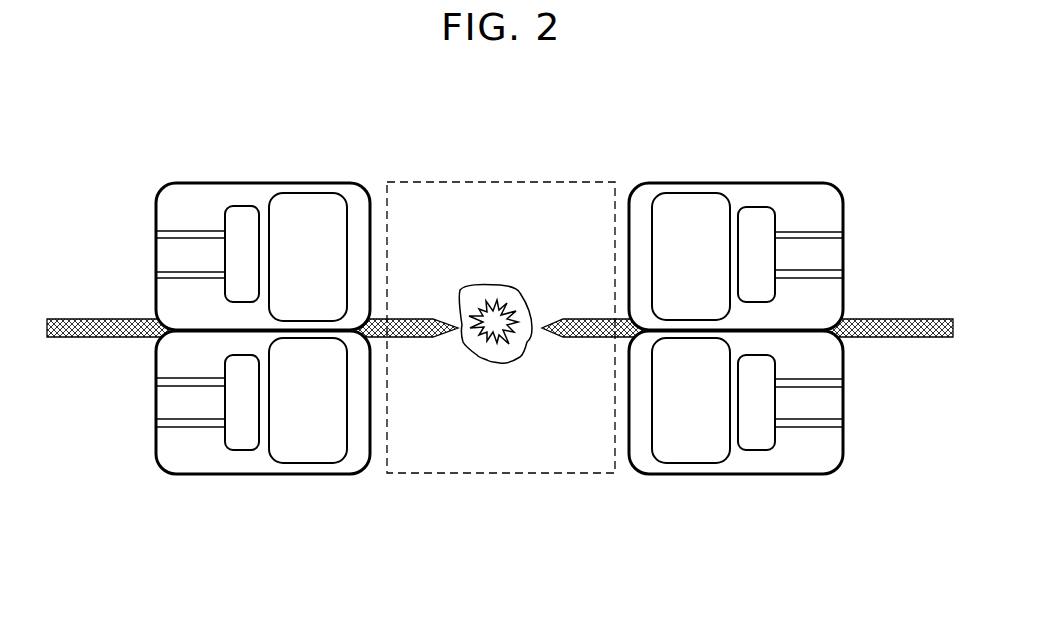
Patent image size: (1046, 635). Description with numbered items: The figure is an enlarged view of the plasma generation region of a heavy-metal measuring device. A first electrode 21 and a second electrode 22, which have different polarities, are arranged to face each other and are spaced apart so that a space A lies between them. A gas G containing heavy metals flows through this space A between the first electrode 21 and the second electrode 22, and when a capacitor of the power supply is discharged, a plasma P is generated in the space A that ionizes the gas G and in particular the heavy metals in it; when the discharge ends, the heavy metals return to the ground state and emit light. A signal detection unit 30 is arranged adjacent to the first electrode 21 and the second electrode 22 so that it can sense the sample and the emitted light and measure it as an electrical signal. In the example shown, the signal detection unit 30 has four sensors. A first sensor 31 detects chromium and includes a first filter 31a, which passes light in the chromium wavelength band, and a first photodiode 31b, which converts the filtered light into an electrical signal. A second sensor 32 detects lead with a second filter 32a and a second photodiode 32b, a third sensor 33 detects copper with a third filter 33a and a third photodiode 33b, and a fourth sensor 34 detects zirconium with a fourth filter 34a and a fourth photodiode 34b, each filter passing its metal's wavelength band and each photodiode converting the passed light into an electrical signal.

The first electrode 21 is at (87, 337).
The second electrode 22 is at (922, 337).
The signal detection unit 30 is at (535, 325).
The first sensor 31 is at (263, 436).
The first filter 31a is at (307, 463).
The first photodiode 31b is at (243, 450).
The second sensor 32 is at (263, 226).
The second filter 32a is at (307, 197).
The second photodiode 32b is at (243, 210).
The third sensor 33 is at (736, 436).
The third filter 33a is at (692, 463).
The third photodiode 33b is at (757, 450).
The fourth sensor 34 is at (736, 226).
The fourth filter 34a is at (693, 197).
The fourth photodiode 34b is at (757, 210).
The space A is at (433, 182).
The plasma P is at (515, 290).
The gas G is at (497, 80).